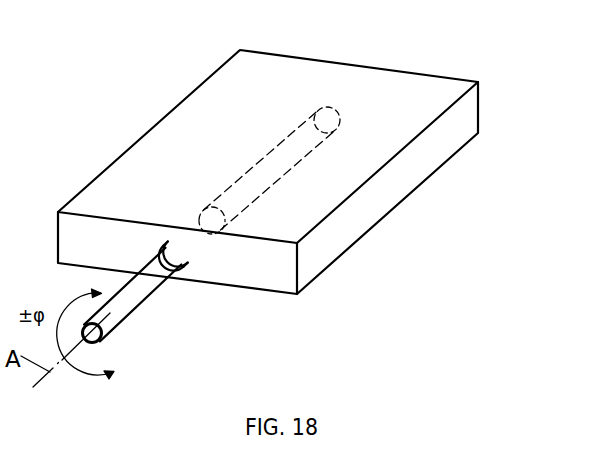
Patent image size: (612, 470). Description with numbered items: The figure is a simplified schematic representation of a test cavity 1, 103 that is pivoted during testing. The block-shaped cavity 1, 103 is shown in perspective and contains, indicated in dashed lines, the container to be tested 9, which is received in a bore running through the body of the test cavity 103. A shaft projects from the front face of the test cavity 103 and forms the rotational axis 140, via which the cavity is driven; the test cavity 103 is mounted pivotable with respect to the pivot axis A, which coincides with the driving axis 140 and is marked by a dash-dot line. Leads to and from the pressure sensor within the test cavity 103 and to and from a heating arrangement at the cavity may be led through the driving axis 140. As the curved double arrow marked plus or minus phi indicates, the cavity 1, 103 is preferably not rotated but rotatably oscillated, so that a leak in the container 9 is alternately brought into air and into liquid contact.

The test cavity 1 is at (268, 151).
The test cavity 103 is at (338, 62).
The container to be tested 9 is at (291, 144).
The rotational axis 140 is at (137, 295).